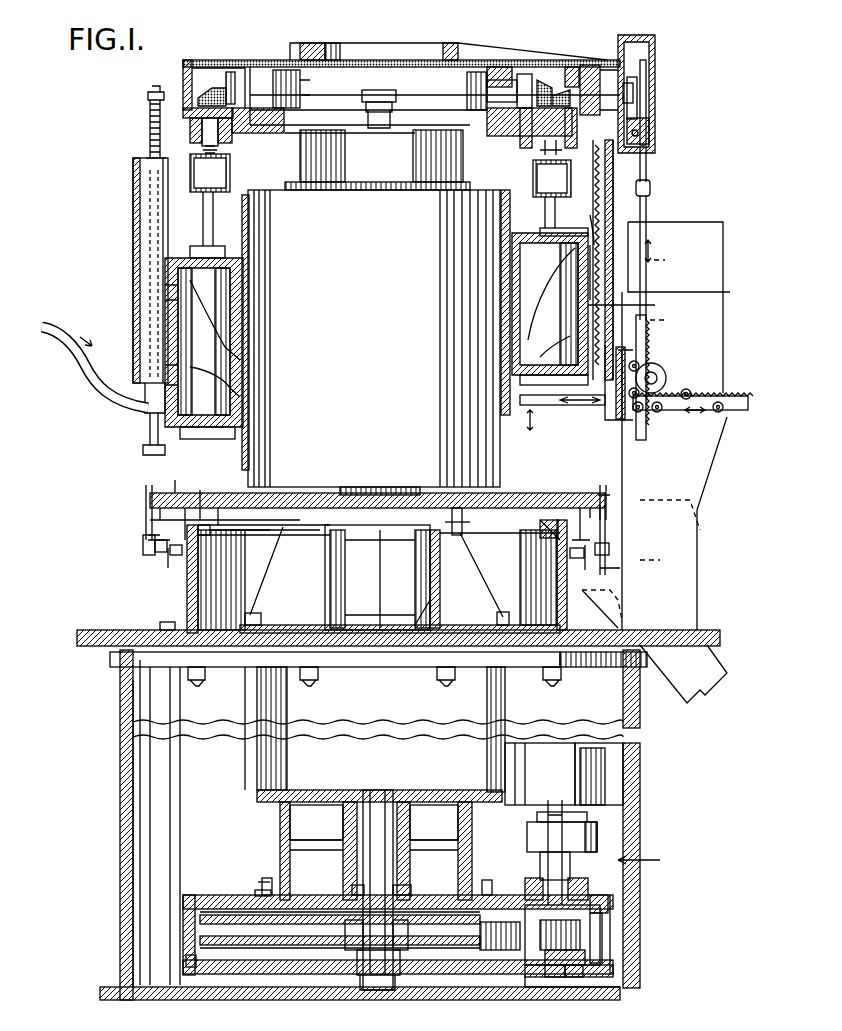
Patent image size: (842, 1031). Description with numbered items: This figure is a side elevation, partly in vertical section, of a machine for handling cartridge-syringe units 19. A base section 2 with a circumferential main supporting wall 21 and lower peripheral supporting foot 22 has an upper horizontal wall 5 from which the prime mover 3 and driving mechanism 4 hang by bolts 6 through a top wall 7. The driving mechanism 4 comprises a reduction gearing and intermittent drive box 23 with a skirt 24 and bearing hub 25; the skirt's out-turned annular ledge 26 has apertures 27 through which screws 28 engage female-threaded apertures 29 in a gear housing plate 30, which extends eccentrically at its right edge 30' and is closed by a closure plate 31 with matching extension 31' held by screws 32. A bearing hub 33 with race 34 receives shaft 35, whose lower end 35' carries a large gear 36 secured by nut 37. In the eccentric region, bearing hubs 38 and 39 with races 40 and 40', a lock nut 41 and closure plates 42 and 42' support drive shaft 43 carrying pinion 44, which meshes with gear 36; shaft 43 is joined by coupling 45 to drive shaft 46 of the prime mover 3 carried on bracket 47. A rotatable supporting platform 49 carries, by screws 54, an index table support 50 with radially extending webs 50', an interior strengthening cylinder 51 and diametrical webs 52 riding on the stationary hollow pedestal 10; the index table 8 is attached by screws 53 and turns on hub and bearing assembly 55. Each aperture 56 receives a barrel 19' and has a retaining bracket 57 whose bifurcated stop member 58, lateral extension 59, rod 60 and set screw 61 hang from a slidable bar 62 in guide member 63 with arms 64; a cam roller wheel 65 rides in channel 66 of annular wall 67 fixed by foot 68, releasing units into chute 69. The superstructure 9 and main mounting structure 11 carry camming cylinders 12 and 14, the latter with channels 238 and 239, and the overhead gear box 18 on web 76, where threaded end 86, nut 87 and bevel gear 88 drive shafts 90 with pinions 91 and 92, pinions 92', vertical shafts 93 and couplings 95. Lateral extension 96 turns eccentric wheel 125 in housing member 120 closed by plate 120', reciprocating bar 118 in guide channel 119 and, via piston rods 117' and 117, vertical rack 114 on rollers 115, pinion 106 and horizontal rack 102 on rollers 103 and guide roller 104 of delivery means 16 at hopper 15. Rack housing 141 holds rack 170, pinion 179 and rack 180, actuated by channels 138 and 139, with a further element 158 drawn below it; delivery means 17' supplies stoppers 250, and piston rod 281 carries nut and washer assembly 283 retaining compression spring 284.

The base section 2 is at (646, 861).
The prime mover 3 is at (605, 775).
The driving mechanism 4 is at (244, 812).
The upper horizontal wall 5 is at (150, 630).
The bolts 6 is at (206, 680).
The top wall 7 is at (125, 210).
The rotary index table 8 is at (184, 488).
The superstructure 9 is at (275, 172).
The stationary hollow pedestal 10 is at (330, 597).
The main mounting structure 11 is at (485, 192).
The camming cylinder 12 is at (540, 240).
The camming cylinder 14 is at (218, 255).
The hopper 15 is at (702, 225).
The cartridge-syringe unit delivery means 16 is at (693, 350).
The delivery means 17' is at (95, 367).
The overhead gear box 18 is at (366, 58).
The cartridge-syringe unit 19 is at (357, 506).
The barrel 19' is at (140, 533).
The circumferential main supporting wall 21 is at (640, 888).
The lower peripheral supporting foot 22 is at (105, 987).
The reduction gearing and intermittent drive box 23 is at (258, 763).
The skirt 24 is at (472, 854).
The bearing hub 25 is at (412, 824).
The out-turned annular ledge 26 is at (256, 892).
The apertures 27 is at (258, 885).
The screw 28 is at (268, 878).
The female-threaded apertures 29 is at (266, 909).
The gear housing plate 30 is at (192, 921).
The right edge 30' is at (633, 900).
The gear housing closure plate 31 is at (398, 973).
The eccentric extension 31' is at (565, 988).
The screws 32 is at (194, 967).
The bearing hub 33 is at (412, 892).
The bearing race 34 is at (355, 888).
The shaft 35 is at (378, 875).
The lower end 35' is at (366, 938).
The large gear 36 is at (497, 950).
The nut 37 is at (375, 990).
The bearing hub 38 is at (665, 946).
The bearing hub 39 is at (604, 918).
The bearing race 40 is at (608, 955).
The bearing race 40' is at (527, 880).
The lock nut 41 is at (582, 888).
The bearing closure plate 42 is at (551, 982).
The bearing closure plate 42' is at (536, 854).
The drive shaft 43 is at (574, 977).
The pinion 44 is at (585, 940).
The coupling 45 is at (598, 840).
The drive shaft 46 is at (562, 808).
The bracket 47 is at (508, 765).
The rotatable supporting platform 49 is at (517, 625).
The index table support 50 is at (282, 571).
The radially extending webs 50' is at (503, 575).
The interior strengthening cylinder 51 is at (440, 568).
The interior diametrical webs 52 is at (437, 600).
The screws 53 is at (455, 534).
The screws 54 is at (258, 615).
The hub and bearing assembly 55 is at (418, 490).
The apertures 56 is at (148, 493).
The retaining bracket 57 is at (143, 545).
The bifurcated stop member 58 is at (157, 553).
The lateral extension 59 is at (168, 568).
The rod 60 is at (185, 508).
The set screw 61 is at (175, 556).
The horizontally slidable bar 62 is at (226, 528).
The guide member 63 is at (218, 508).
The arms 64 is at (575, 505).
The cam roller wheel 65 is at (600, 512).
The cam roller guideway channel 66 is at (212, 533).
The annular wall 67 is at (243, 493).
The circumferential flange or foot 68 is at (168, 622).
The chute 69 is at (605, 607).
The depending cylindrical web 76 is at (305, 153).
The screw-threaded end 86 is at (388, 90).
The nut 87 is at (364, 92).
The bevel gear 88 is at (428, 108).
The horizontally disposed shaft 90 is at (232, 72).
The larger pinion 91 is at (300, 80).
The smaller outer pinion 92 is at (212, 66).
The pinion 92' is at (217, 101).
The vertical shaft 93 is at (203, 145).
The coupling 95 is at (193, 188).
The lateral extension 96 is at (572, 96).
The rack 102 is at (735, 412).
The flanged rollers 103 is at (658, 412).
The upper guide roller 104 is at (690, 391).
The pinion gear 106 is at (676, 386).
The second rack bar 114 is at (647, 331).
The flanged rollers 115 is at (640, 364).
The piston rod 117 is at (660, 250).
The extension piston rod 117' is at (666, 164).
The slideable bar 118 is at (648, 123).
The guide channel 119 is at (646, 73).
The housing member 120 is at (617, 79).
The circular plate 120' is at (658, 91).
The eccentric wheel 125 is at (634, 104).
The upper camming channel 138 is at (545, 290).
The lowermost camming channel 139 is at (570, 336).
The rack housing 141 is at (598, 169).
The arm 158 is at (548, 408).
The rack 170 is at (604, 200).
The pinion 179 is at (594, 225).
The second rack 180 is at (650, 305).
The channel 238 is at (240, 360).
The channel 239 is at (240, 397).
The stoppers 250 is at (152, 418).
The piston rod 281 is at (150, 118).
The nut and washer assembly 283 is at (148, 91).
The compression spring 284 is at (150, 138).